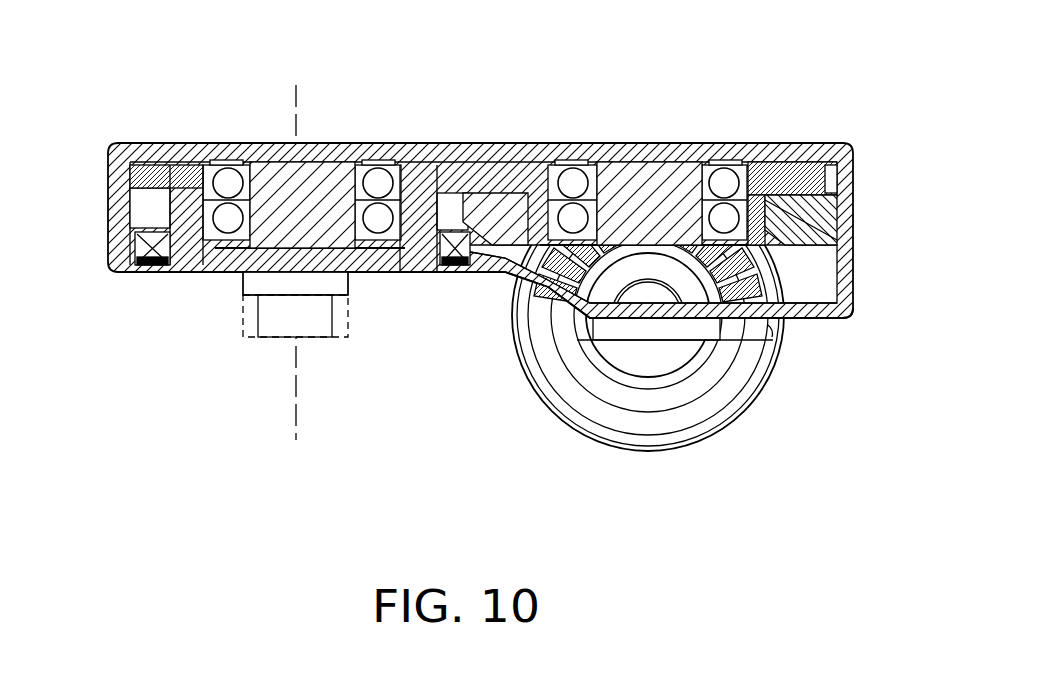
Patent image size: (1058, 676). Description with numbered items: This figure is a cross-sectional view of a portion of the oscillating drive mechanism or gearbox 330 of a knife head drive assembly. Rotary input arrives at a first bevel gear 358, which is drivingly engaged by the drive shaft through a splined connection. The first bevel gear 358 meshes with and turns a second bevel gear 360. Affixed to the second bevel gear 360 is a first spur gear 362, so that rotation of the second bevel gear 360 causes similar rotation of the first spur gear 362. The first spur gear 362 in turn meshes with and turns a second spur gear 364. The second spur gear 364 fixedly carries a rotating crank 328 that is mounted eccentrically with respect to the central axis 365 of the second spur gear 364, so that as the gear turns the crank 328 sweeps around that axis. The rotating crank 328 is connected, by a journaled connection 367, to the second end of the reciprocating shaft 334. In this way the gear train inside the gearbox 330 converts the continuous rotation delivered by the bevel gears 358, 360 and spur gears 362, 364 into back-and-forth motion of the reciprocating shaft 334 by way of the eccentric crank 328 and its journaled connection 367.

The oscillating drive mechanism or gearbox 330 is at (866, 272).
The first bevel gear 358 is at (748, 345).
The second bevel gear 360 is at (840, 246).
The first spur gear 362 is at (838, 176).
The second spur gear 364 is at (135, 175).
The central axis 365 is at (298, 400).
The journaled connection 367 is at (243, 321).
The rotating crank 328 is at (275, 338).
The reciprocating shaft 334 is at (362, 327).